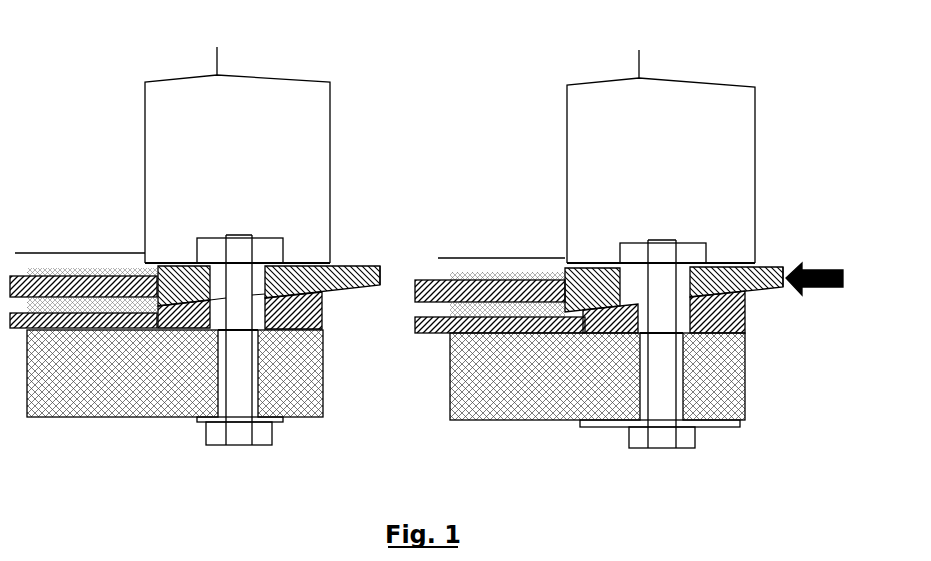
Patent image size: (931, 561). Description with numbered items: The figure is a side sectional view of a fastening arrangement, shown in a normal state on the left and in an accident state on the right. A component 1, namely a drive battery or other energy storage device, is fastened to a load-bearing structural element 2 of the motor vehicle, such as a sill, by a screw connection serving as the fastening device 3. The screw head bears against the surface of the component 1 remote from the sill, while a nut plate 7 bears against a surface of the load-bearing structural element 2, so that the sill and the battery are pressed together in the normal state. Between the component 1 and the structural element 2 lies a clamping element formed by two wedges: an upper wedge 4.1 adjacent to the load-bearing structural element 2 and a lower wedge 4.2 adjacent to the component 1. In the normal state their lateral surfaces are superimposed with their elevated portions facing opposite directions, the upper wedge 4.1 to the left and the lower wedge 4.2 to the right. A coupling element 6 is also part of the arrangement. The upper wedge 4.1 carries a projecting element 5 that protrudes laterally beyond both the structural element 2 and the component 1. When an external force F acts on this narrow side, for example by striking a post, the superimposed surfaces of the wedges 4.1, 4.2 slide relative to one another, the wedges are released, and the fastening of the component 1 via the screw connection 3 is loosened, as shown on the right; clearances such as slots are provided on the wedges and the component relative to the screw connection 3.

The component 1 is at (165, 390).
The load-bearing structural element 2 is at (332, 130).
The fastening device 3 is at (274, 433).
The upper wedge 4.1 is at (340, 268).
The lower wedge 4.2 is at (322, 320).
The projecting element 5 is at (371, 293).
The coupling element 6 is at (65, 283).
The nut plate 7 is at (275, 240).
The external force F is at (830, 279).